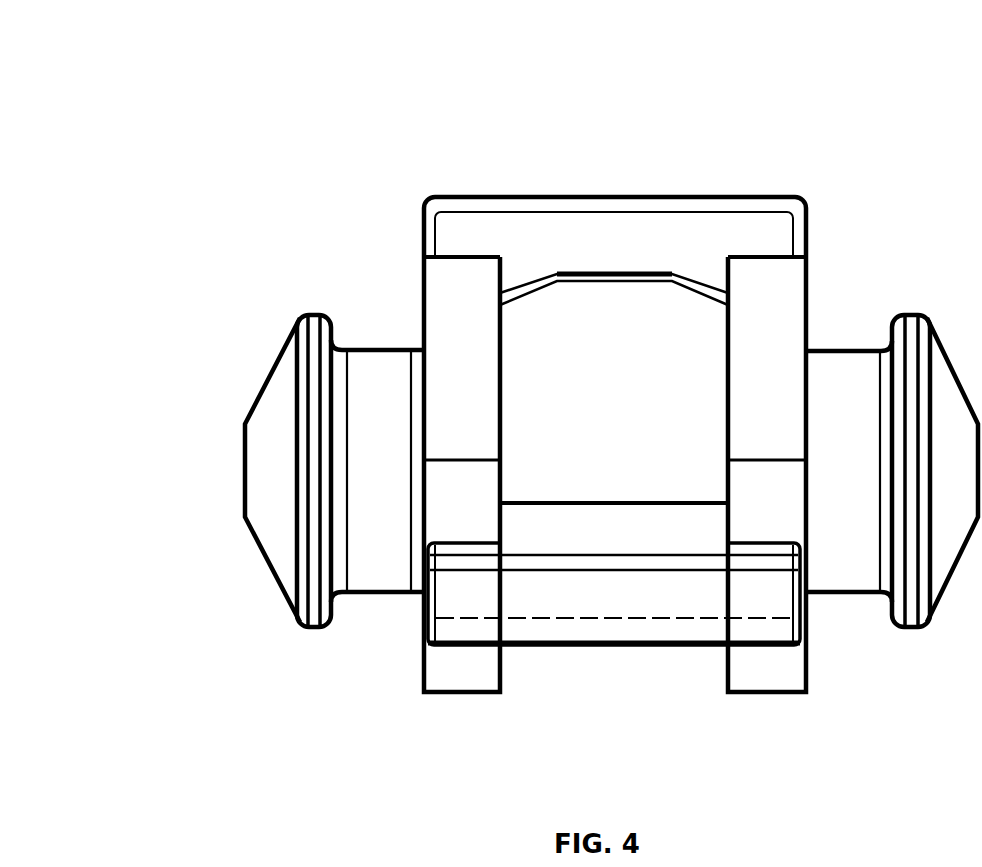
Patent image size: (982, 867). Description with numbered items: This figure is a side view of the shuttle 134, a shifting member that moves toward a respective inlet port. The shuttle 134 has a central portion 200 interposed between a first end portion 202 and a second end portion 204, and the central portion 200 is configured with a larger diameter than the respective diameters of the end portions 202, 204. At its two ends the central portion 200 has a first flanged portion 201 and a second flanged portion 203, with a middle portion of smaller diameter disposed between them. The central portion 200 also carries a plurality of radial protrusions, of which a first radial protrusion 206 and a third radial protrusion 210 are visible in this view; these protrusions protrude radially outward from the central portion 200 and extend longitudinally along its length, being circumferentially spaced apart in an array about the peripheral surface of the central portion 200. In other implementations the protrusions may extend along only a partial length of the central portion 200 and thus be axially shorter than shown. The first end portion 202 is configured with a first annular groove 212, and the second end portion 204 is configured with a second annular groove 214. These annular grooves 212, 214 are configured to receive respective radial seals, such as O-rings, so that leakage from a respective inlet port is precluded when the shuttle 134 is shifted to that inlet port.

The shuttle 134 is at (92, 99).
The central portion 200 is at (606, 475).
The first flanged portion 201 is at (763, 695).
The first end portion 202 is at (892, 648).
The second flanged portion 203 is at (462, 695).
The second end portion 204 is at (307, 660).
The first radial protrusion 206 is at (635, 182).
The third radial protrusion 210 is at (670, 652).
The first annular groove 212 is at (853, 323).
The second annular groove 214 is at (373, 318).